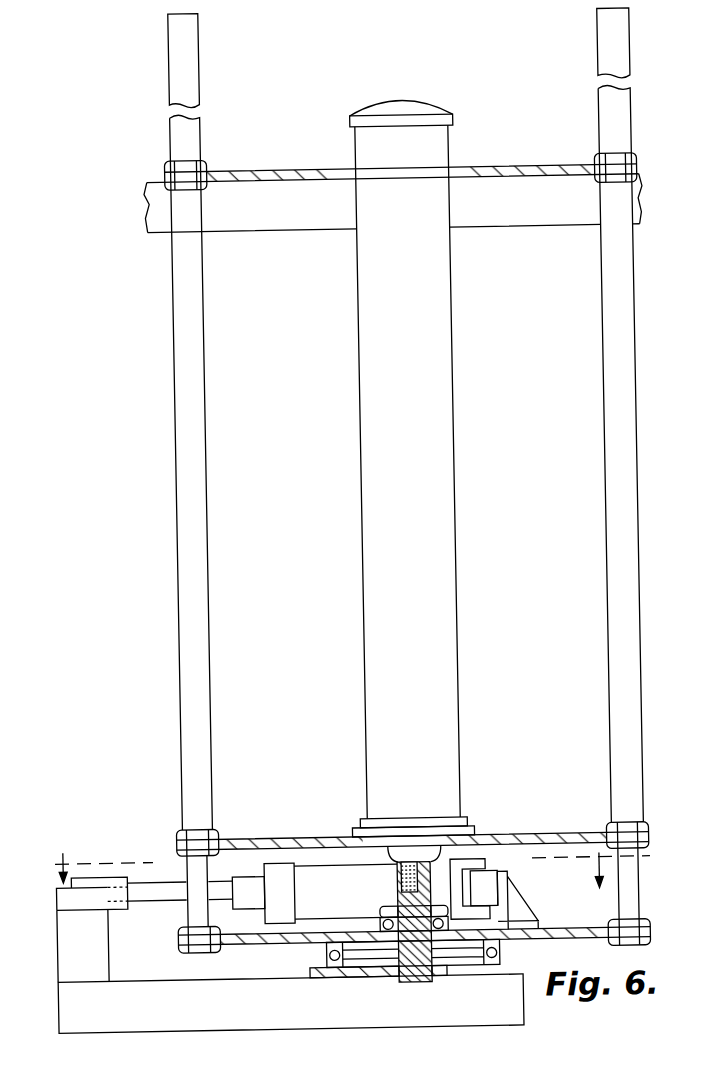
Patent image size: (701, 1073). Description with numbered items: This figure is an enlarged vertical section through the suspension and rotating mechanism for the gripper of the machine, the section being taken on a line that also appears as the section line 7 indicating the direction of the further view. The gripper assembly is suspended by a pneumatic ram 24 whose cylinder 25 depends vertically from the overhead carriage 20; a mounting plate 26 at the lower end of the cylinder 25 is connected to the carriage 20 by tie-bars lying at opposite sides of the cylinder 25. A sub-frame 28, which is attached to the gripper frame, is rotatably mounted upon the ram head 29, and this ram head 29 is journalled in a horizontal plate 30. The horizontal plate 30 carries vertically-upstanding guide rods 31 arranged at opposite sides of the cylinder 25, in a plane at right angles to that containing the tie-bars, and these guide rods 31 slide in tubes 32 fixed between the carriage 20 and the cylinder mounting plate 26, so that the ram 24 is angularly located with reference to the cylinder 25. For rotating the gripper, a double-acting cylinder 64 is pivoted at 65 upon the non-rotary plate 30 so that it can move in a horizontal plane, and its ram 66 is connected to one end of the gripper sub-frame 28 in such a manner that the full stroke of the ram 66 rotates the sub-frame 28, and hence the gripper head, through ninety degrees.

The section line 7- 7 is at (353, 869).
The overhead carriage 20 is at (268, 187).
The pneumatic ram 24 is at (393, 875).
The cylinder 25 is at (451, 398).
The mounting plate 26 is at (528, 837).
The sub-frame 28 is at (290, 967).
The ram head 29 is at (408, 983).
The horizontal plate 30 is at (574, 933).
The guide rods 31 is at (204, 139).
The tubes 32 is at (204, 409).
The double-acting cylinder 64 is at (315, 892).
The pivot 65 is at (466, 883).
The ram 66 is at (160, 889).